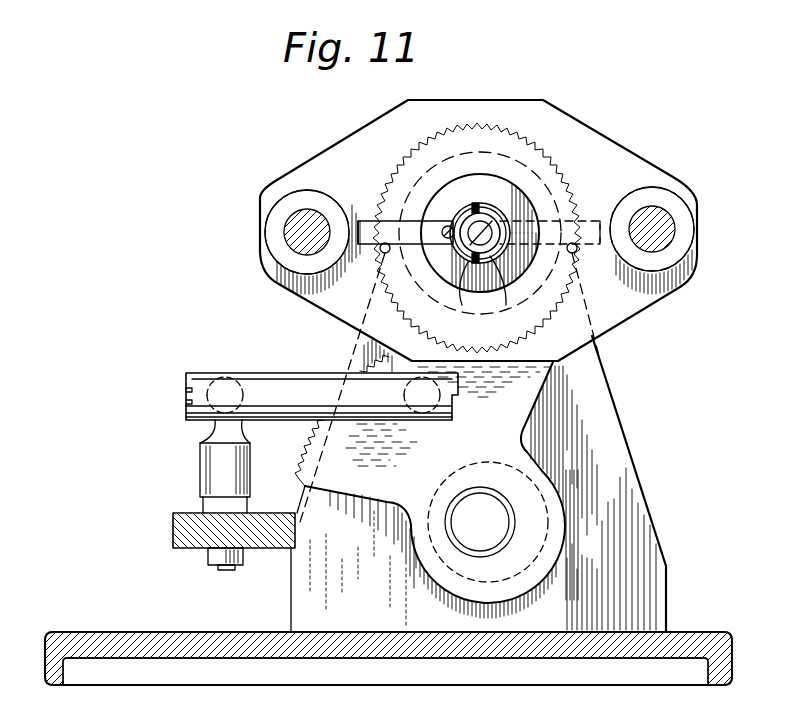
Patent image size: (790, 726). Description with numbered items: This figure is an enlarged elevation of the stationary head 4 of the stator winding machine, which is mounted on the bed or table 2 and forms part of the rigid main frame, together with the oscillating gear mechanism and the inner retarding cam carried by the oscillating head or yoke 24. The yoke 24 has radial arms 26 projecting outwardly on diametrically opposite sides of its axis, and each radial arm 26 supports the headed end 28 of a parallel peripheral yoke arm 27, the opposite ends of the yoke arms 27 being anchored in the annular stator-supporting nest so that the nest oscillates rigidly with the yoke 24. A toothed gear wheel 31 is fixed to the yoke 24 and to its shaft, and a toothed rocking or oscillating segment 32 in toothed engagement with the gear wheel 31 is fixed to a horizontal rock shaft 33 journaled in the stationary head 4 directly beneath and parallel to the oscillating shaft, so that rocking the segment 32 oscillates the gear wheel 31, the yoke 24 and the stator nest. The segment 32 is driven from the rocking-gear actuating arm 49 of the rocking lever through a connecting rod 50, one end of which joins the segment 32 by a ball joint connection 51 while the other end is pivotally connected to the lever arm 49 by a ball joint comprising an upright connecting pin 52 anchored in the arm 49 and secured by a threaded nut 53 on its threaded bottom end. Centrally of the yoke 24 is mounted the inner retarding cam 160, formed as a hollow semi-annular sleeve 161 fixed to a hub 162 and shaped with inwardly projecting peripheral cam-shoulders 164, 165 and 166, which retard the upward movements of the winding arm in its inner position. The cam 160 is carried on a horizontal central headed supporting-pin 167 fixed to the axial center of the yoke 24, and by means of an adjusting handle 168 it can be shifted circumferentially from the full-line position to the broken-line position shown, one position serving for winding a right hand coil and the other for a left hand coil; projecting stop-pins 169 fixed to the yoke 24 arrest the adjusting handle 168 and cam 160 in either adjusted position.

The bed or table 2 is at (122, 633).
The stationary head 4 is at (622, 467).
The oscillating head or yoke 24 is at (482, 101).
The radial arms 26 is at (275, 190).
The yoke arms 27 is at (295, 240).
The headed end 28 is at (268, 228).
The toothed gear wheel 31 is at (542, 150).
The toothed rocking or oscillating segment 32 is at (527, 398).
The horizontal rock shaft 33 is at (500, 533).
The rocking-gear actuating arm 49 is at (178, 530).
The connecting rod 50 is at (313, 390).
The ball joint connection 51 is at (437, 362).
The upright connecting pin 52 is at (203, 465).
The threaded nut 53 is at (210, 560).
The inner retarding cam 160 is at (439, 221).
The hollow semi-annular sleeve 161 is at (443, 212).
The hub 162 is at (506, 305).
The peripheral cam-shoulder 164 is at (462, 305).
The peripheral cam-shoulder 165 is at (471, 205).
The peripheral cam-shoulder 166 is at (473, 203).
The headed supporting-pin 167 is at (488, 230).
The adjusting handle 168 is at (358, 220).
The stop-pins 169 is at (384, 253).